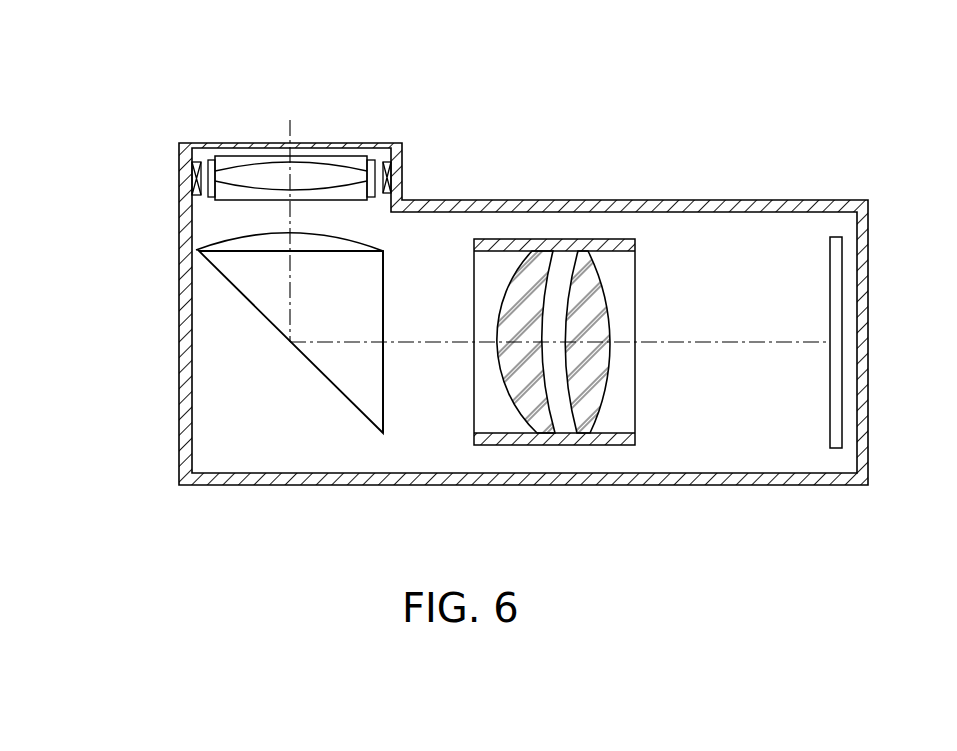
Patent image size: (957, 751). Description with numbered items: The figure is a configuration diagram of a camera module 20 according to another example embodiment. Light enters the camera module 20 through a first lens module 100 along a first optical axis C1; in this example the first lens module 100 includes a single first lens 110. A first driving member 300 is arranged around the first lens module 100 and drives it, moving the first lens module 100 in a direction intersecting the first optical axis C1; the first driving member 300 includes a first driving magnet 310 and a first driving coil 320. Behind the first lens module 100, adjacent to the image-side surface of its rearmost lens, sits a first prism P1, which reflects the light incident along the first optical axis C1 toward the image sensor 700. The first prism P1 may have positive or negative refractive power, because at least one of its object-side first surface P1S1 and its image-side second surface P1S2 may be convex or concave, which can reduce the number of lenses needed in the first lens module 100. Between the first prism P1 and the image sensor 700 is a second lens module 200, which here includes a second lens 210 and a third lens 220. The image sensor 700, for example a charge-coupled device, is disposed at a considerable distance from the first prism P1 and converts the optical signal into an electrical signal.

The camera module 20 is at (648, 178).
The first lens module 100 is at (344, 155).
The first lens 110 is at (388, 176).
The second lens module 200 is at (554, 407).
The second lens 210 is at (541, 427).
The third lens 220 is at (583, 427).
The first driving member 300 is at (263, 166).
The first driving magnet 310 is at (196, 168).
The first driving coil 320 is at (209, 181).
The image sensor 700 is at (836, 449).
The first prism P1 is at (275, 374).
The first surface P1S1 is at (229, 244).
The second surface P1S2 is at (383, 413).
The first optical axis C1 is at (291, 149).